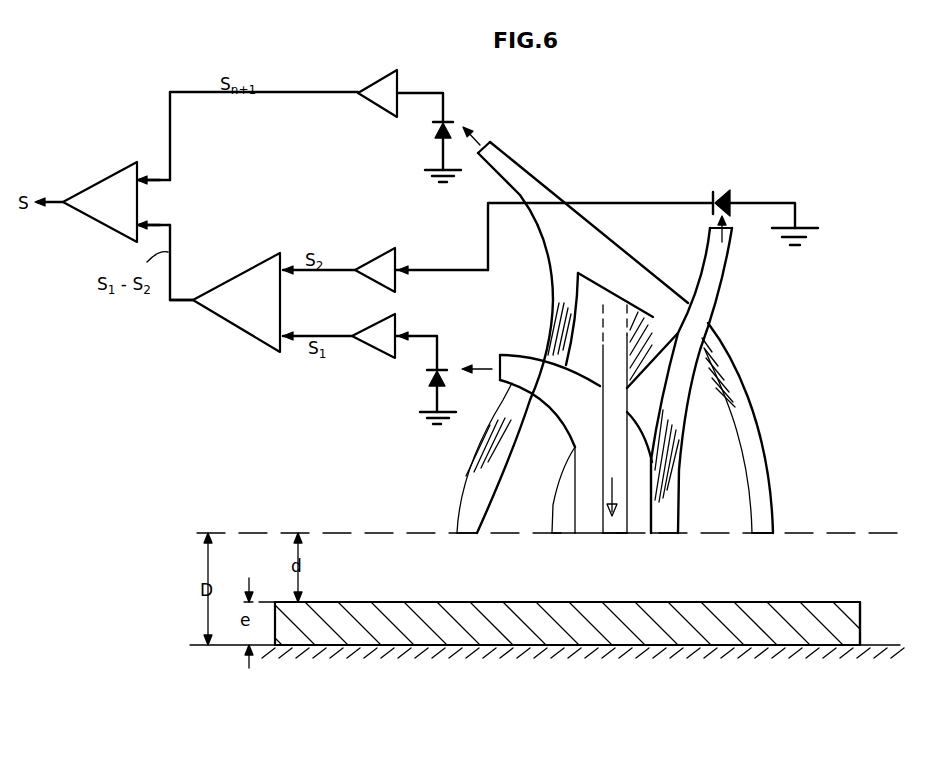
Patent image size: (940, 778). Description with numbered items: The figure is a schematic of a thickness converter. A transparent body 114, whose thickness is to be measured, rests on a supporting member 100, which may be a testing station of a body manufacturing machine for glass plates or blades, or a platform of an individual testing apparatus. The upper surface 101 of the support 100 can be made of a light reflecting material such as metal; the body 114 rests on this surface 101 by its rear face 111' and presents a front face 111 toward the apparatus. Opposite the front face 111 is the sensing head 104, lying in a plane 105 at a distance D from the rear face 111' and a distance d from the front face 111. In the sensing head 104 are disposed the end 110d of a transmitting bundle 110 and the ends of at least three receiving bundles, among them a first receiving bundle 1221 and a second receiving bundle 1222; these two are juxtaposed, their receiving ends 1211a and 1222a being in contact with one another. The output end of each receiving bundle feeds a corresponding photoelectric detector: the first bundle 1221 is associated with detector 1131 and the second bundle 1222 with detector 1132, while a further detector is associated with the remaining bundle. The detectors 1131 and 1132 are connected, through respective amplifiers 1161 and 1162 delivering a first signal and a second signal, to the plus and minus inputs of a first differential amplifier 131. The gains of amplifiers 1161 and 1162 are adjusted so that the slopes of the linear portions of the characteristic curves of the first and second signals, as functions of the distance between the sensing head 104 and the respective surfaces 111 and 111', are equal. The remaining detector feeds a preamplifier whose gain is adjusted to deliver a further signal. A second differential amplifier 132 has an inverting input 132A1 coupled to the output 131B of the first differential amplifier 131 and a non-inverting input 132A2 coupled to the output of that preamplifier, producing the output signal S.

The second differential amplifier 132 is at (90, 203).
The input (+) of second differential amplifier 132A2 is at (142, 178).
The input (-) of second differential amplifier 132A1 is at (142, 222).
The first differential amplifier 131 is at (243, 290).
The output of first differential amplifier 131B is at (188, 304).
The amplifier 1162 is at (375, 268).
The amplifier 1161 is at (368, 330).
The photoelectric detector 1132 is at (722, 200).
The photoelectric detector 1131 is at (445, 368).
The sensing head 104 is at (629, 361).
The transmitting bundle 110 is at (615, 372).
The end of transmitting bundle 110d is at (613, 537).
The receiving bundle 1222 is at (572, 487).
The receiving bundle 1221 is at (588, 492).
The receiving end of first receiving bundle 1211a is at (583, 537).
The receiving end of second receiving bundle 1222a is at (667, 537).
The plane 105 is at (388, 530).
The supporting member 100 is at (352, 655).
The upper surface of support 101 is at (330, 646).
The front face of transparent body 111 is at (578, 615).
The transparent body 114 is at (845, 624).
The rear face of transparent body 111' is at (575, 668).